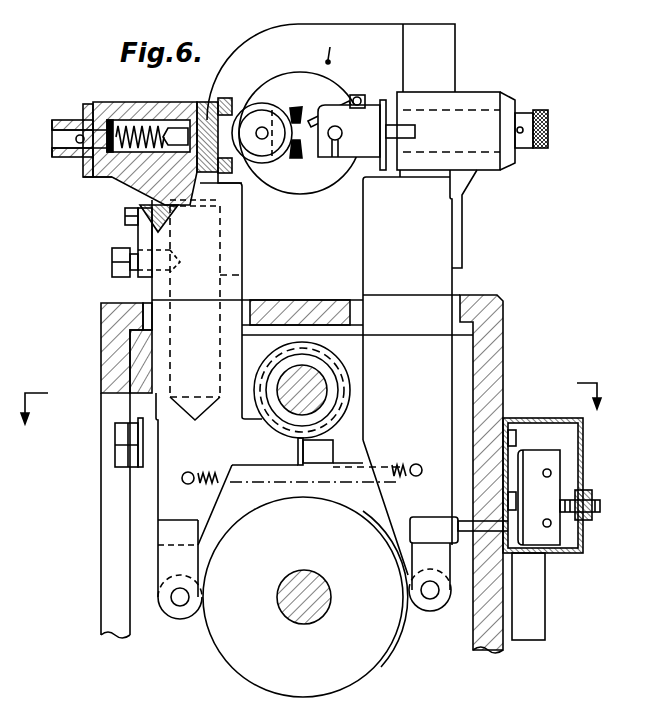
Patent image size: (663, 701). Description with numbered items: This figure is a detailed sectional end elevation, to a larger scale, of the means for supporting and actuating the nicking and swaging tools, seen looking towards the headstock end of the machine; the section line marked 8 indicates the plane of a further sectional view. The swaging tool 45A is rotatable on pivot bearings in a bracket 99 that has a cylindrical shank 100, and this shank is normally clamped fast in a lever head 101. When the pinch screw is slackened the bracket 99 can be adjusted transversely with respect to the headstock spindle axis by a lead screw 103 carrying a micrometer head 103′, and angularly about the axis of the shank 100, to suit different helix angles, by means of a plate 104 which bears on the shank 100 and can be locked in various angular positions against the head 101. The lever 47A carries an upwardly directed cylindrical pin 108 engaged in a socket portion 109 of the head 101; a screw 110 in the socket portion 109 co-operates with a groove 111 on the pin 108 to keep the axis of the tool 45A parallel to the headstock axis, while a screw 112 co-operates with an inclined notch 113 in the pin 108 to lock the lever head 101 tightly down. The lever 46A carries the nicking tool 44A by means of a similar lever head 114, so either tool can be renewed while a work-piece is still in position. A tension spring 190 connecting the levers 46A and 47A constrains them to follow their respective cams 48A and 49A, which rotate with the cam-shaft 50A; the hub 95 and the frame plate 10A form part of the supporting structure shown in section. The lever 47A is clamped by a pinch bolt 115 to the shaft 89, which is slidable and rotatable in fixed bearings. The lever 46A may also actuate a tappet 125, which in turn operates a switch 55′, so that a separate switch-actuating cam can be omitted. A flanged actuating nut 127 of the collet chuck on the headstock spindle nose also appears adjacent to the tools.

The micrometer head 103′ is at (67, 120).
The lead screw 103 is at (132, 120).
The lever head 101 is at (160, 96).
The cylindrical shank 100 is at (209, 120).
The bracket 99 is at (228, 102).
The plate 104 is at (234, 174).
The swaging tool 45A is at (268, 104).
The flanged actuating nut 127 is at (322, 88).
The nicking tool 44A is at (310, 110).
The lever head 114 is at (478, 98).
The groove 111 is at (140, 208).
The screw 110 is at (125, 218).
The screw 112 is at (112, 264).
The inclined notch 113 is at (178, 262).
The socket portion 109 is at (240, 250).
The cylindrical pin 108 is at (240, 278).
The hub 95 is at (292, 343).
The shaft 89 is at (323, 377).
The frame plate 10A is at (110, 338).
The lever 47A is at (137, 358).
The lever 46A is at (473, 360).
The pinch bolt 115 is at (118, 458).
The tension spring 190 is at (277, 483).
The cam 49A is at (212, 628).
The tappet 125 is at (460, 535).
The cam 48A is at (380, 662).
The cam-shaft 50A is at (315, 610).
The switch 55′ is at (550, 483).
The section line 8- 8 is at (311, 413).